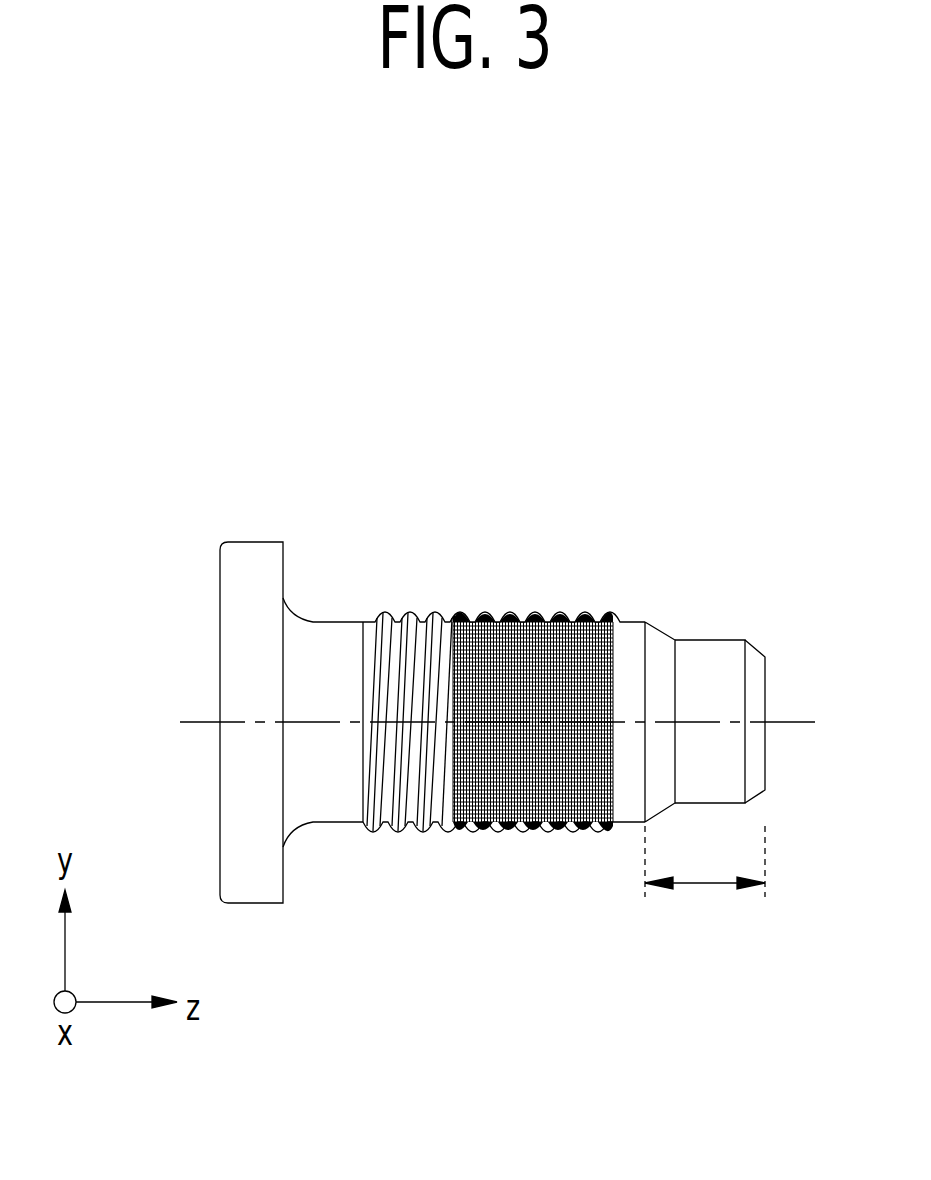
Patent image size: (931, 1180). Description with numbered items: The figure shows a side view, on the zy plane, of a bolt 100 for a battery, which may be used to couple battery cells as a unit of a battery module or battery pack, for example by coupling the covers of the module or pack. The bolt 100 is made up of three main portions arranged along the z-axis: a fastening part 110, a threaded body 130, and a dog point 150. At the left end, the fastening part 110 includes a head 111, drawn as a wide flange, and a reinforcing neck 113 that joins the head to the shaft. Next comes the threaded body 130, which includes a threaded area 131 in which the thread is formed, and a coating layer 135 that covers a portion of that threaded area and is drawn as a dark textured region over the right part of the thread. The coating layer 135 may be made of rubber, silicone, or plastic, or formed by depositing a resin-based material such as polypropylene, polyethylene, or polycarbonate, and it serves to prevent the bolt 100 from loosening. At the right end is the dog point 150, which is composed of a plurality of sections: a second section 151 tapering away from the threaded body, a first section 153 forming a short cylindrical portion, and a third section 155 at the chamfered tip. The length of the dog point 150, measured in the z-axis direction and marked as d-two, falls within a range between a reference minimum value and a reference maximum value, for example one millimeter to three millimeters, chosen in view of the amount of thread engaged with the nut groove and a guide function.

The bolt 100 is at (551, 380).
The fastening part 110 is at (220, 442).
The head 111 is at (251, 541).
The reinforcing neck 113 is at (299, 616).
The threaded body 130 is at (552, 482).
The threaded area 131 is at (410, 611).
The coating layer 135 is at (538, 611).
The dog point 150 is at (610, 505).
The second section 151 is at (661, 634).
The first section 153 is at (712, 639).
The third section 155 is at (766, 651).